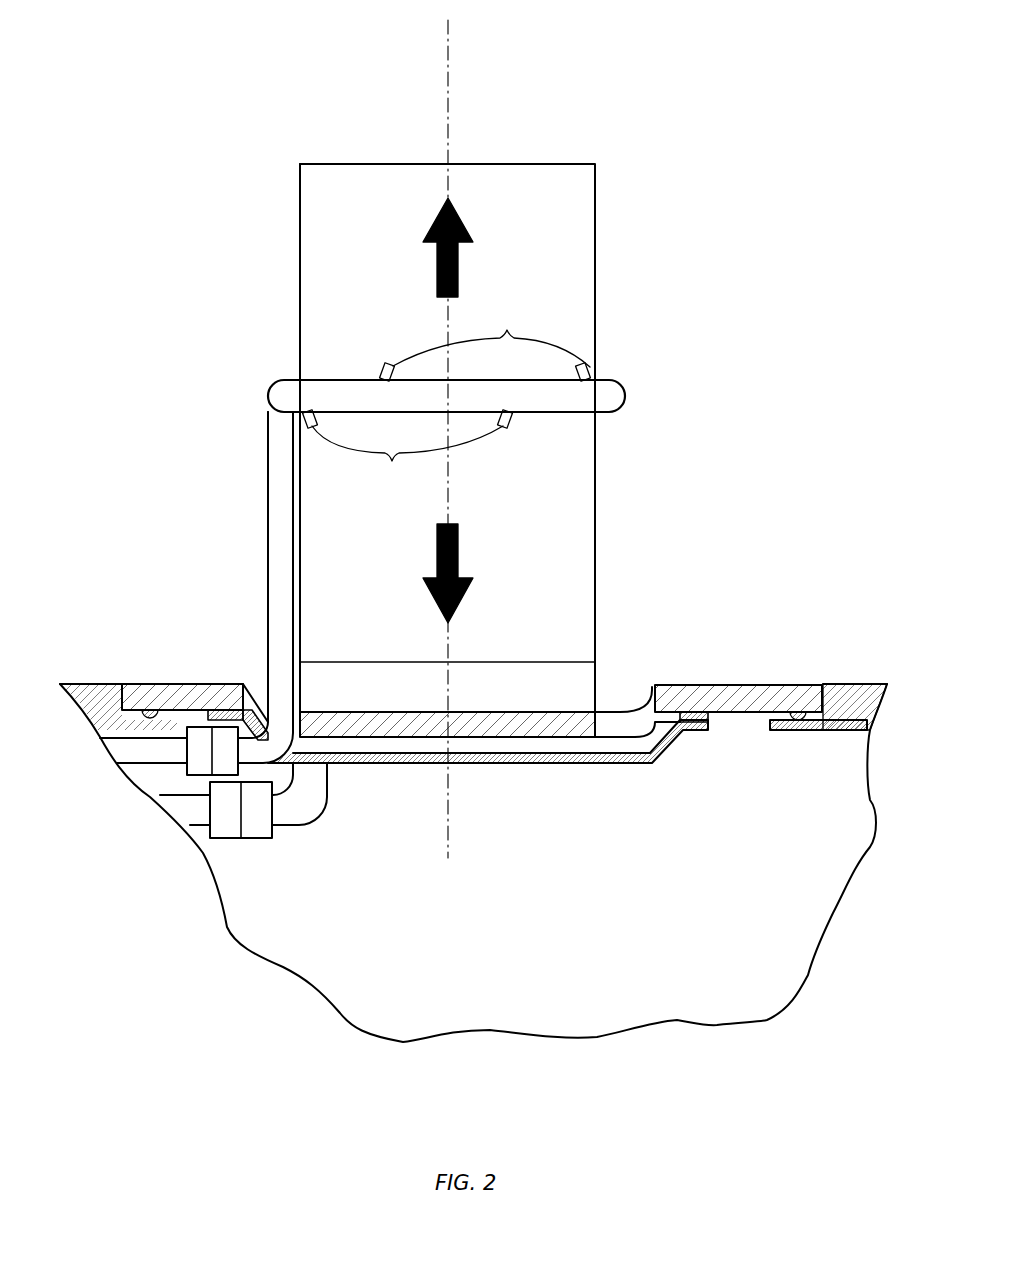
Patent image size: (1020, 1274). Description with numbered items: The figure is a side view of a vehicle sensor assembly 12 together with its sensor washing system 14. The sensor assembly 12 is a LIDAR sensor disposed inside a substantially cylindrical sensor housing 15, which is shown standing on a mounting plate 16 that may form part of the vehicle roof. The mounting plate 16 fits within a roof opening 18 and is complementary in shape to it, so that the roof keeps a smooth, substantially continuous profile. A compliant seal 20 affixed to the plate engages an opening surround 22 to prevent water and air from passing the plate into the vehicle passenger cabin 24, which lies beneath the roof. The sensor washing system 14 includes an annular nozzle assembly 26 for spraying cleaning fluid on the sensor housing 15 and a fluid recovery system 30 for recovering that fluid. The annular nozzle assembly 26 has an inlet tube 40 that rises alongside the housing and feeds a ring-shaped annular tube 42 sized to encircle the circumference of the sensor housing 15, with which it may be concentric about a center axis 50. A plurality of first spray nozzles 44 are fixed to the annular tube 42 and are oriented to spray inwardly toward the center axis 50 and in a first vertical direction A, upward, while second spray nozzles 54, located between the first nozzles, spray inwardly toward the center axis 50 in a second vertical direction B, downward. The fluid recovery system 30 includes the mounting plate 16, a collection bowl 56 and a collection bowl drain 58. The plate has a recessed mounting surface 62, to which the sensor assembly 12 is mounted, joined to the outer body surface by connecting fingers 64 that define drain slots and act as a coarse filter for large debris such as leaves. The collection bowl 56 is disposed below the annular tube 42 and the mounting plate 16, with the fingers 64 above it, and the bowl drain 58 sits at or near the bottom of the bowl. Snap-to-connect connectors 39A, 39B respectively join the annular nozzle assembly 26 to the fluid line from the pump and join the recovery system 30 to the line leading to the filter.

The sensor assembly 12 is at (569, 158).
The sensor washing system 14 is at (228, 498).
The sensor housing 15 is at (299, 186).
The mounting plate 16 is at (718, 687).
The roof opening 18 is at (800, 716).
The seal 20 is at (810, 726).
The opening surround 22 is at (782, 730).
The vehicle passenger cabin 24 is at (577, 943).
The annular nozzle assembly 26 is at (262, 566).
The fluid recovery system 30 is at (335, 842).
The connector 39A is at (187, 768).
The connector 39B is at (250, 838).
The inlet tube 40 is at (268, 432).
The annular tube 42 is at (628, 396).
The first spray nozzles 44 is at (485, 344).
The center axis 50 is at (448, 74).
The second spray nozzles 54 is at (408, 449).
The collection bowl 56 is at (528, 766).
The collection bowl drain 58 is at (330, 768).
The mounting surface 62 is at (520, 712).
The connecting fingers 64 is at (622, 705).
The first vertical direction A is at (438, 268).
The second vertical direction B is at (437, 550).